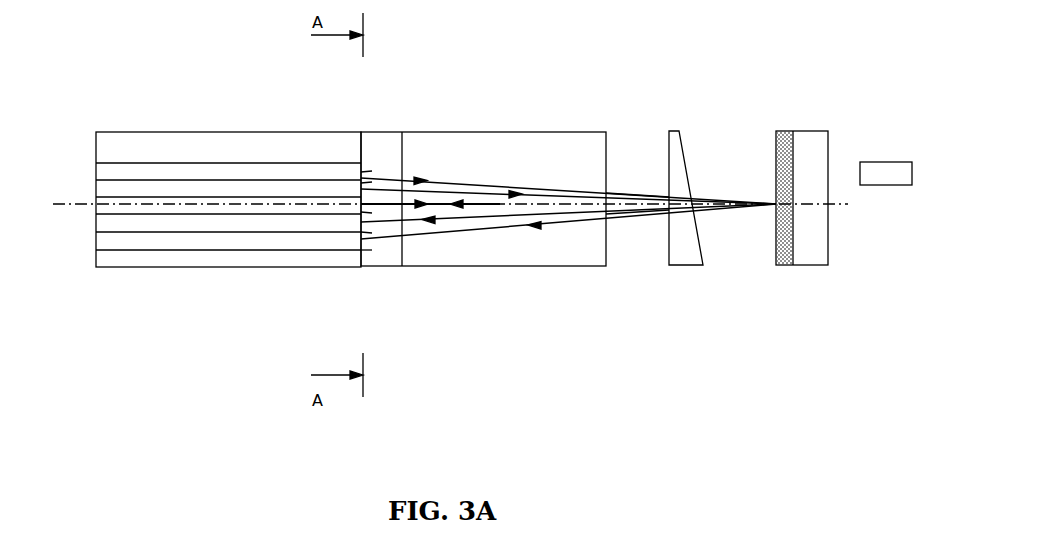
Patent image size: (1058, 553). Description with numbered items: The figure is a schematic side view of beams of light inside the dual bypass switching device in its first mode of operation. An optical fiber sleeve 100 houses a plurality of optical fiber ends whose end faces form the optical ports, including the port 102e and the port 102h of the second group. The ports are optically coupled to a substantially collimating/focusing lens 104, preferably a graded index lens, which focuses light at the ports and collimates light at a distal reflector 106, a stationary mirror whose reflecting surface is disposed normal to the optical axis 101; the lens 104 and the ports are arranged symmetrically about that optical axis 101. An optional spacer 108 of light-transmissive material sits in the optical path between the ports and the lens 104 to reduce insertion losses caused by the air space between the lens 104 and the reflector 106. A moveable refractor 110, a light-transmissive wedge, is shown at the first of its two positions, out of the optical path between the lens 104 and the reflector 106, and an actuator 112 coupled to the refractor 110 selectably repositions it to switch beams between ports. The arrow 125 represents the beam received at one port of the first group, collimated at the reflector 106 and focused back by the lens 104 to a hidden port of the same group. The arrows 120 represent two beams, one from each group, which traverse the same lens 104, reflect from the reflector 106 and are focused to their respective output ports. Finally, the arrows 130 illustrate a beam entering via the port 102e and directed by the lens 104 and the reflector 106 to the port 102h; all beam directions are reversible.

The optical fiber sleeve 100 is at (152, 130).
The optical axis 101 is at (75, 207).
The port of the second group 102e is at (360, 172).
The port of the second group 102h is at (358, 248).
The collimating/focusing lens 104 is at (500, 130).
The spacer 108 is at (387, 130).
The moveable refractor 110 is at (680, 131).
The reflector 106 is at (820, 131).
The actuator 112 is at (886, 173).
The arrows representing two beams of light 120 is at (491, 213).
The arrow representing a beam of light 125 is at (441, 208).
The arrows illustrating a beam 130 is at (644, 190).